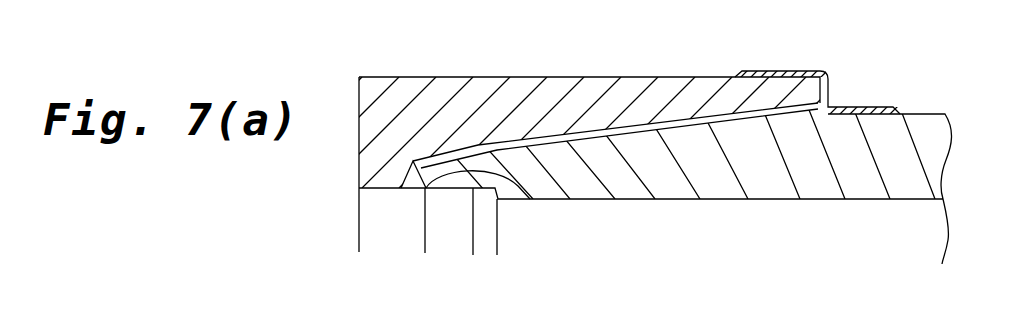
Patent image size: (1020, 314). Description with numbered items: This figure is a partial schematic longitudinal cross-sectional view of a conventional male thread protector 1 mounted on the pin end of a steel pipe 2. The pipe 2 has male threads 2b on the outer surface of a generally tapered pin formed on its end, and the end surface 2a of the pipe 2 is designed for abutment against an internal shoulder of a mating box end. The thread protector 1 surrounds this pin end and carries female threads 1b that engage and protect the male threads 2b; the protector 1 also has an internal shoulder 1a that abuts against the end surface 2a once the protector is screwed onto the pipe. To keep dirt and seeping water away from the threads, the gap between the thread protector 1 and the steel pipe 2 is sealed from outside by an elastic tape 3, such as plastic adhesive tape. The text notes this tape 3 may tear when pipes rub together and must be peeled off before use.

The thread protector 1 is at (449, 94).
The internal shoulder 1a is at (549, 199).
The female threads 1b is at (595, 131).
The steel pipe 2 is at (817, 188).
The end surface 2a is at (405, 190).
The male threads 2b is at (667, 123).
The elastic tape 3 is at (787, 72).